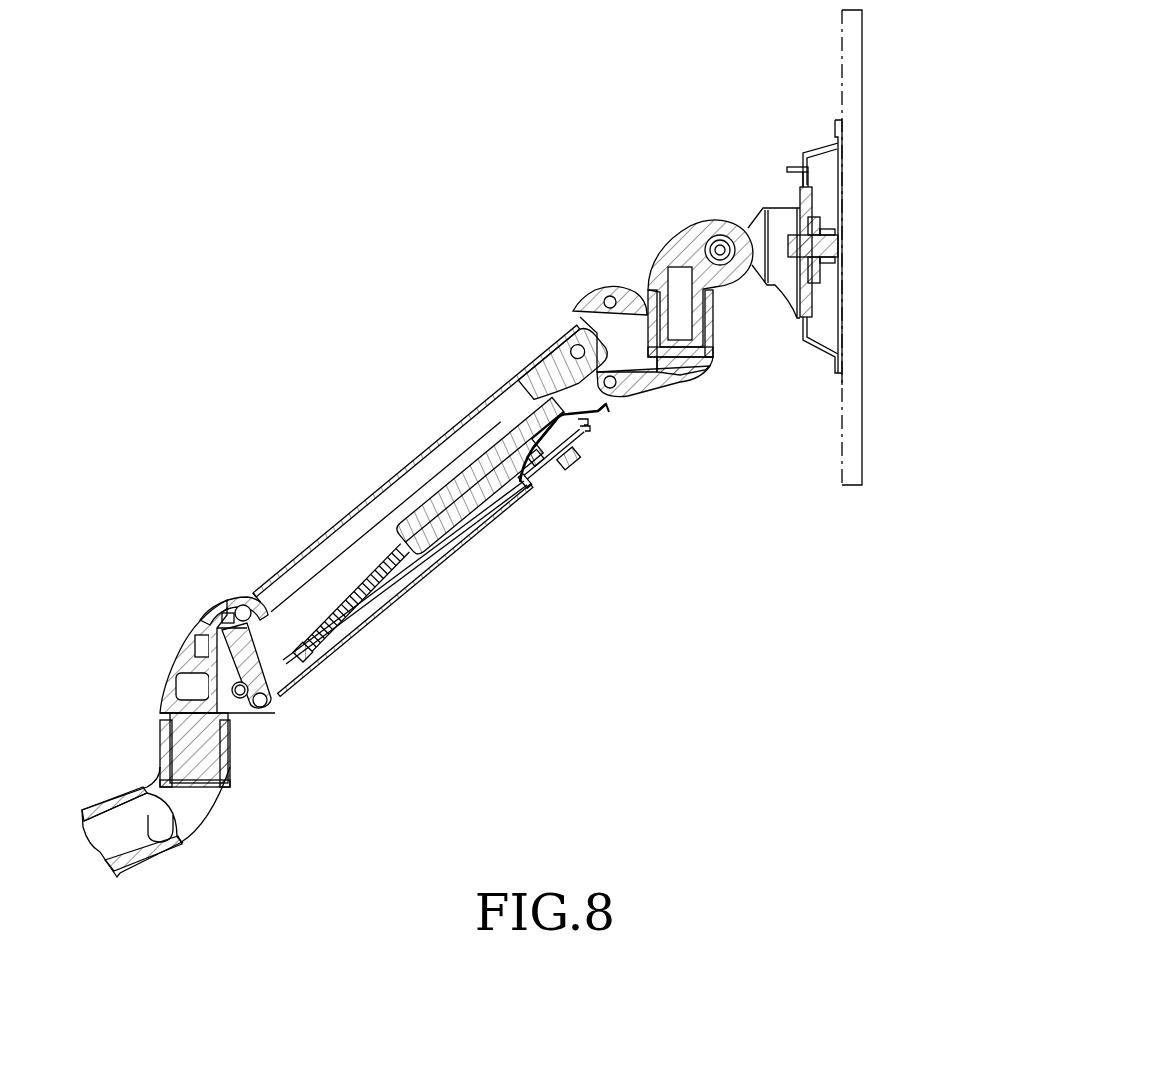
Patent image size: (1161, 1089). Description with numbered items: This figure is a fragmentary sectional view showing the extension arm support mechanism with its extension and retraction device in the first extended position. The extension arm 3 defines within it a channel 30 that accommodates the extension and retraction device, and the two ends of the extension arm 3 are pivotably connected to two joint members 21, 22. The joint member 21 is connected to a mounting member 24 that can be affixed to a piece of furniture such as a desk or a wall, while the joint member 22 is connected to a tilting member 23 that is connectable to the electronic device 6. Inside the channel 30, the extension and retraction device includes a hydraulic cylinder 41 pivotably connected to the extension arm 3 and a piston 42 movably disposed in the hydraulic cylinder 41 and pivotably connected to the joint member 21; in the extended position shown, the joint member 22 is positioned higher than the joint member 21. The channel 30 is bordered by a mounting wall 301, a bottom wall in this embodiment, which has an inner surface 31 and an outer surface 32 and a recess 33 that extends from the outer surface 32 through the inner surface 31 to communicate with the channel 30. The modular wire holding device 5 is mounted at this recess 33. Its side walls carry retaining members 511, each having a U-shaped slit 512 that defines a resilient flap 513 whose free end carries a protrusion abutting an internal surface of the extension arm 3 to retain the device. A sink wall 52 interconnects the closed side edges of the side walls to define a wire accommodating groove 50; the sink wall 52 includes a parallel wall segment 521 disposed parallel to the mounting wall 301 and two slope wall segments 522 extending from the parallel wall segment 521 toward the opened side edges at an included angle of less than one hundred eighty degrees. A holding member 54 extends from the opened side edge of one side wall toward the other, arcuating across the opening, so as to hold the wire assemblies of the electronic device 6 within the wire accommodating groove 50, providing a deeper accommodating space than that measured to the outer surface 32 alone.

The extension arm 3 is at (432, 519).
The modular wire holding device 5 is at (600, 447).
The electronic device 6 is at (870, 47).
The joint member 21 is at (203, 622).
The joint member 22 is at (588, 292).
The tilting member 23 is at (688, 230).
The mounting member 24 is at (115, 790).
The channel 30 is at (438, 452).
The inner surface 31 is at (392, 583).
The outer surface 32 is at (423, 562).
The recess 33 is at (522, 483).
The hydraulic cylinder 41 is at (445, 528).
The piston 42 is at (328, 643).
The wire accommodating groove 50 is at (545, 452).
The sink wall 52 is at (511, 447).
The holding member 54 is at (558, 457).
The mounting wall 301 is at (484, 510).
The retaining member 511 is at (682, 433).
The U-shaped slit 512 is at (590, 429).
The resilient flap 513 is at (588, 421).
The parallel wall segment 521 is at (537, 433).
The slope wall segment 522 is at (580, 412).